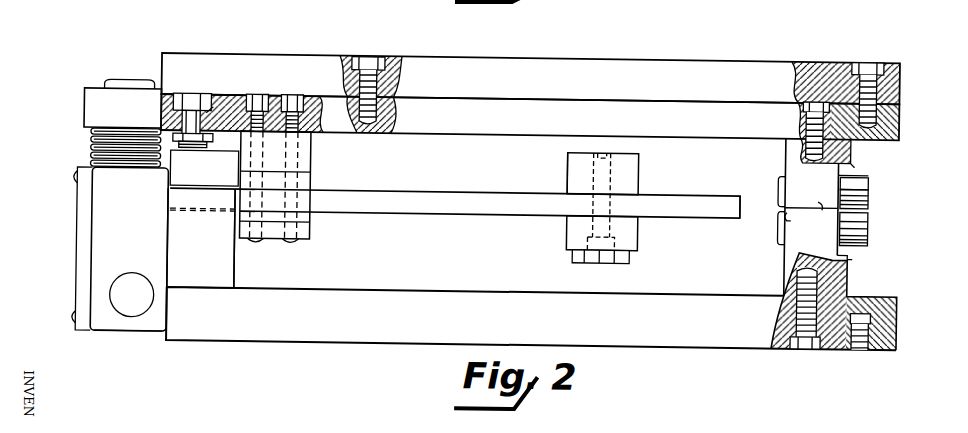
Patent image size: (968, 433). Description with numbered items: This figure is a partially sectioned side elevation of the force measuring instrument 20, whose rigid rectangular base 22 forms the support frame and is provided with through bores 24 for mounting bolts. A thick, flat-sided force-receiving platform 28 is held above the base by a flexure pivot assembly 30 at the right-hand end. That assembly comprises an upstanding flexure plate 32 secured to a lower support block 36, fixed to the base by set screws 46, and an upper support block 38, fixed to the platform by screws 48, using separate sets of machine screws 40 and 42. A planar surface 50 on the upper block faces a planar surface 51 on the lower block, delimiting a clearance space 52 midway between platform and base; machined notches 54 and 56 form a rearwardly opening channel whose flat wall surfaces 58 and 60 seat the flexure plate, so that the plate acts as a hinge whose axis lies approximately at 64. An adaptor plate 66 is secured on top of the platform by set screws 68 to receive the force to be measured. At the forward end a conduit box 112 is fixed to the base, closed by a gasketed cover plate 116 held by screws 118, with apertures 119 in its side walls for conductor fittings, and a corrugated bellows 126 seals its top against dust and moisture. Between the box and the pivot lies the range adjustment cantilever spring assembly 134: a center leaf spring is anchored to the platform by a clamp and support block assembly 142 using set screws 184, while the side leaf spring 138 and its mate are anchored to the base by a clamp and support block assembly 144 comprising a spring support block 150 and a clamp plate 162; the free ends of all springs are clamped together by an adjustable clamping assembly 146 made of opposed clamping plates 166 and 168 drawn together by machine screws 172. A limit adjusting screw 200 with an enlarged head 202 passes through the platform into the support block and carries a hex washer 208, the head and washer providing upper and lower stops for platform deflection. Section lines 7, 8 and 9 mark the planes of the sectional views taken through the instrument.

The section line 7- 7 is at (257, 19).
The section line 8- 8 is at (336, 53).
The section line 9- 9 is at (615, 121).
The force measuring instrument 20 is at (902, 325).
The base 22 is at (702, 338).
The through bores 24 is at (872, 310).
The force-receiving platform 28 is at (424, 129).
The flexure pivot assembly 30 is at (780, 148).
The flexure plate 32 is at (868, 174).
The support block 36 is at (783, 243).
The support block 38 is at (779, 172).
The machine screws 40 is at (868, 212).
The machine screws 42 is at (868, 191).
The set screws 46 is at (805, 341).
The screws 48 is at (800, 98).
The planar surface 50 is at (808, 198).
The planar surface 51 is at (798, 217).
The clearance space 52 is at (785, 204).
The machined notch 54 is at (852, 248).
The machined notch 56 is at (851, 159).
The wall surface 58 is at (840, 231).
The wall surface 60 is at (840, 175).
The hinge axis 64 is at (842, 213).
The adaptor plate 66 is at (535, 52).
The set screws 68 is at (361, 58).
The conduit box 112 is at (128, 332).
The cover plate 116 is at (77, 215).
The screws 118 is at (74, 179).
The apertures 119 is at (128, 277).
The bellows 126 is at (88, 137).
The range adjustment cantilever spring assembly 134 is at (408, 217).
The side leaf spring 138 is at (689, 211).
The clamp and support block assembly 142 is at (315, 157).
The clamp and support block assembly 144 is at (240, 270).
The adjustable clamping assembly 146 is at (643, 167).
The spring support block 150 is at (215, 287).
The clamp plate 162 is at (211, 176).
The clamping plate 166 is at (567, 162).
The clamping plate 168 is at (567, 232).
The machine screws 172 is at (628, 254).
The set screws 184 is at (297, 93).
The limit adjusting screw 200 is at (214, 108).
The enlarged head 202 is at (200, 92).
The hex washer 208 is at (175, 149).